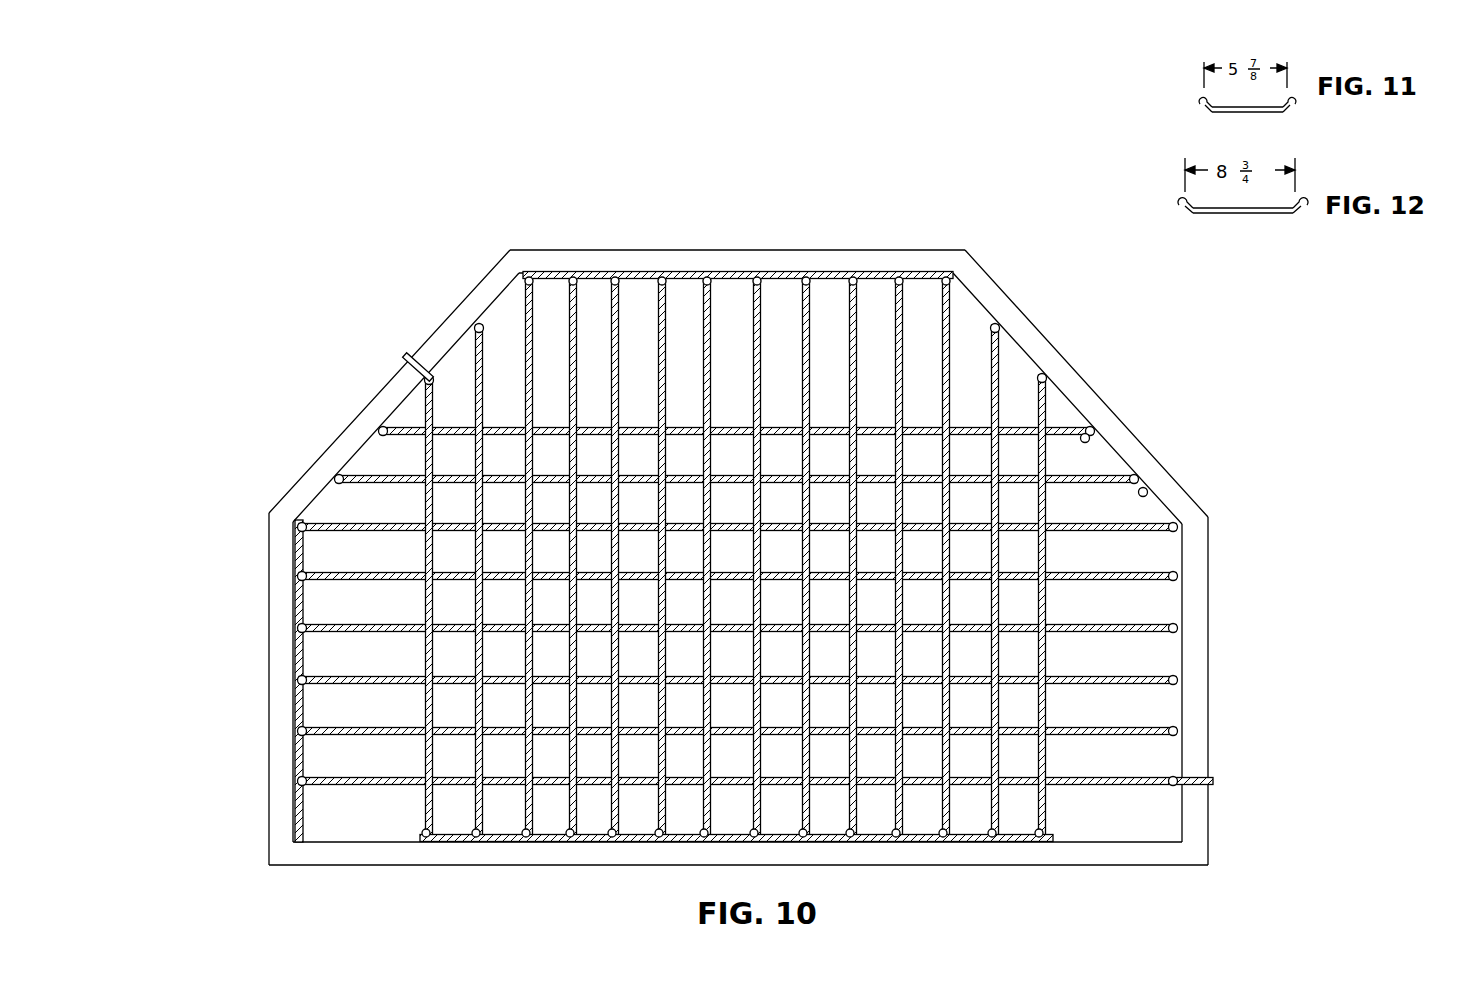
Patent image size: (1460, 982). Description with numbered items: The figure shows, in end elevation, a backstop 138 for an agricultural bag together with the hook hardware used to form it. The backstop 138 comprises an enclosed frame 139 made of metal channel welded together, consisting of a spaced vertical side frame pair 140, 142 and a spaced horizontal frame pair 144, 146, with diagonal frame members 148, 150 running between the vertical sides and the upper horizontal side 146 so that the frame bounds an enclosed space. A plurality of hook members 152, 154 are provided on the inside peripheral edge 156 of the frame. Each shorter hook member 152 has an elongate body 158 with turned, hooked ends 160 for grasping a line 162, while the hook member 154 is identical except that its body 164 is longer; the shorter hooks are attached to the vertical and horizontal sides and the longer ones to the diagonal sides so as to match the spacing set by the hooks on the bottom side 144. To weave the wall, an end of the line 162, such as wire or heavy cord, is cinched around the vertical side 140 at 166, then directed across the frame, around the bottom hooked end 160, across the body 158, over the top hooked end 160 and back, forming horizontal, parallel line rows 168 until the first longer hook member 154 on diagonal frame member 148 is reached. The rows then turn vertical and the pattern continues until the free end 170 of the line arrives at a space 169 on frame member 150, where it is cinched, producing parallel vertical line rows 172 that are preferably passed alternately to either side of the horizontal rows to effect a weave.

In FIG. 10, the backstop 138 is at (1012, 232).
In FIG. 10, the enclosed frame 139 is at (1087, 405).
In FIG. 10, the vertical side frame member 140 is at (1195, 655).
In FIG. 10, the vertical side frame member 142 is at (283, 693).
In FIG. 10, the bottom horizontal frame member 144 is at (643, 853).
In FIG. 10, the upper horizontal frame member 146 is at (762, 268).
In FIG. 10, the diagonal frame member 148 is at (1012, 330).
In FIG. 10, the diagonal frame member 150 is at (462, 313).
In FIG. 10, the hook member 152 is at (293, 755).
In FIG. 11, the hook member 152 is at (1255, 113).
In FIG. 10, the hook member 154 is at (980, 293).
In FIG. 12, the hook member 154 is at (1243, 212).
In FIG. 10, the inside peripheral edge 156 is at (1133, 445).
In FIG. 11, the elongate body 158 is at (1222, 112).
In FIG. 10, the hooked end 160 is at (307, 797).
In FIG. 11, the hooked end 160 is at (1290, 100).
In FIG. 10, the line 162 is at (1103, 785).
In FIG. 12, the body 164 is at (1210, 215).
In FIG. 10, the cinching point 166 is at (1225, 768).
In FIG. 10, the horizontal line rows 168 is at (888, 740).
In FIG. 10, the frame space 169 is at (426, 350).
In FIG. 10, the free end of the line 170 is at (420, 378).
In FIG. 10, the vertical line rows 172 is at (585, 300).